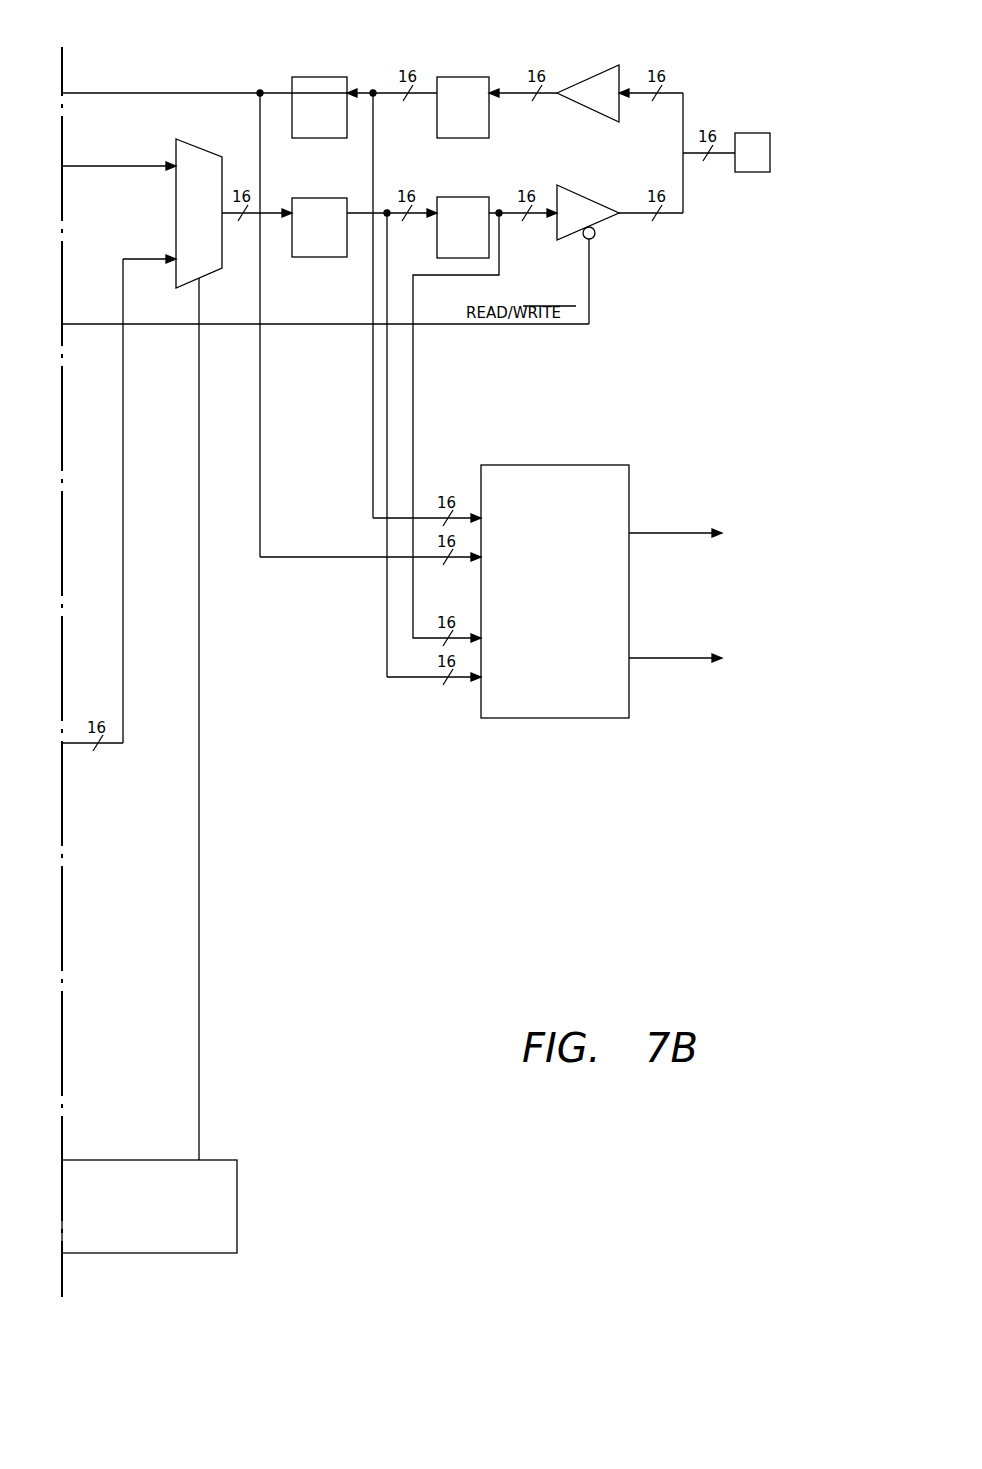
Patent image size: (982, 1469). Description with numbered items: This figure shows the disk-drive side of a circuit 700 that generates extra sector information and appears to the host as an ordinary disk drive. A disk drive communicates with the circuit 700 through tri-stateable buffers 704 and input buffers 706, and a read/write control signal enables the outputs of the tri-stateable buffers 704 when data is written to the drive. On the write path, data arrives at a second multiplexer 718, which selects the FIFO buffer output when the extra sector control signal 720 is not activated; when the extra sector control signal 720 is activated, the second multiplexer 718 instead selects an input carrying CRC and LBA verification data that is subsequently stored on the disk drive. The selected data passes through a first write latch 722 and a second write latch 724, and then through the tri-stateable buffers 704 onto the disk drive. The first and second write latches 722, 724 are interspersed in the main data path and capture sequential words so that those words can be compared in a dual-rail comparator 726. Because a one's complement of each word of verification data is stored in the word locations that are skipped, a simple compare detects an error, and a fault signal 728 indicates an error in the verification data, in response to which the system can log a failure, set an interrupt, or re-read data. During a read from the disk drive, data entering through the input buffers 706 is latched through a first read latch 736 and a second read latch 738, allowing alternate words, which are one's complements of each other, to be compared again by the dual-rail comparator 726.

The circuit 700 is at (720, 27).
The tri-stateable buffers 704 is at (593, 193).
The input buffers 706 is at (598, 70).
The second multiplexer 718 is at (203, 147).
The extra sector control signal 720 is at (200, 312).
The first write latch 722 is at (310, 257).
The second write latch 724 is at (475, 197).
The dual-rail comparator 726 is at (557, 718).
The fault signal 728 is at (656, 660).
The first read latch 736 is at (468, 77).
The second read latch 738 is at (328, 77).